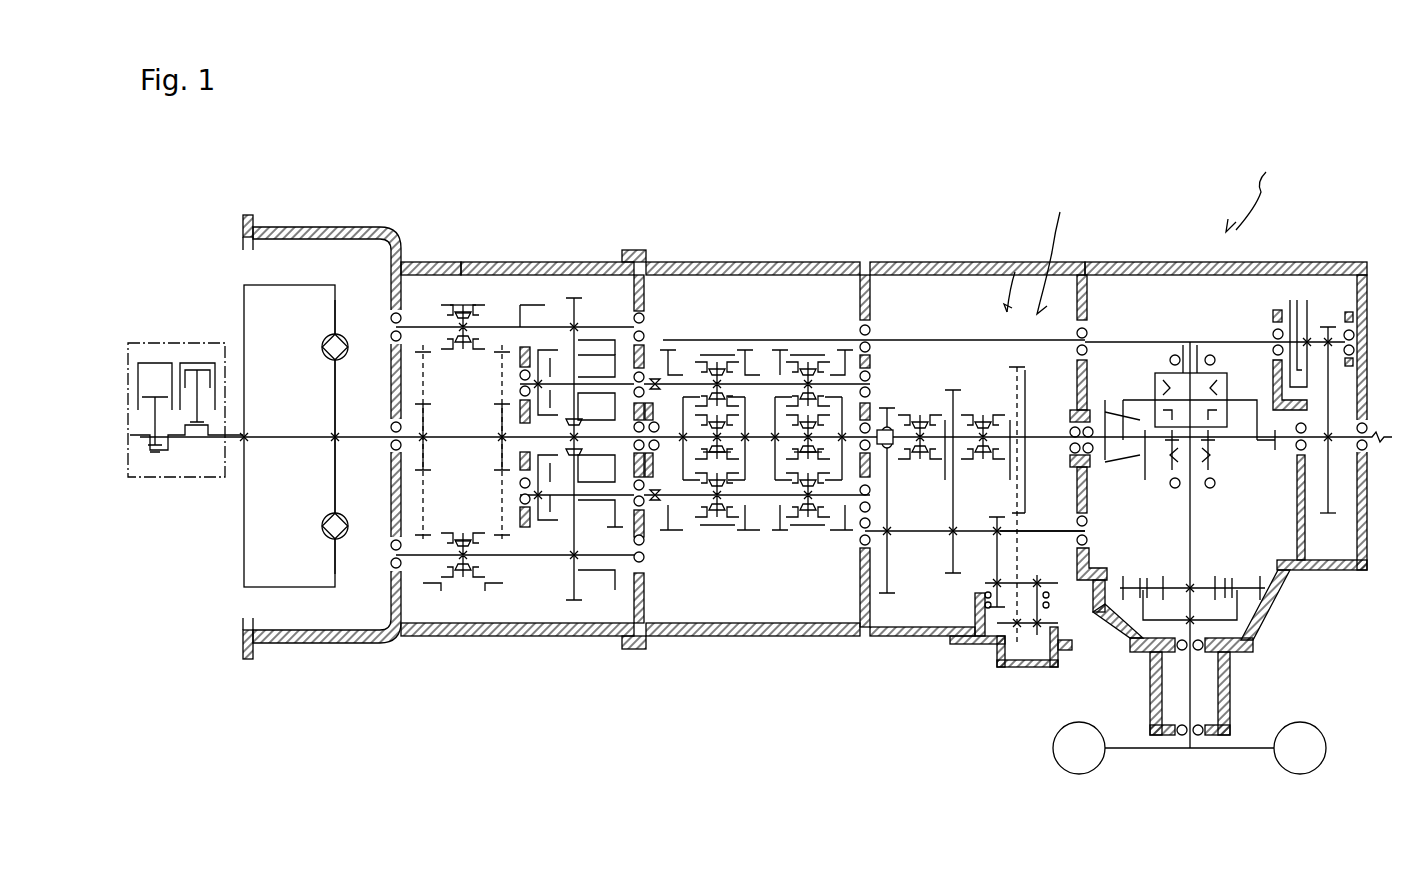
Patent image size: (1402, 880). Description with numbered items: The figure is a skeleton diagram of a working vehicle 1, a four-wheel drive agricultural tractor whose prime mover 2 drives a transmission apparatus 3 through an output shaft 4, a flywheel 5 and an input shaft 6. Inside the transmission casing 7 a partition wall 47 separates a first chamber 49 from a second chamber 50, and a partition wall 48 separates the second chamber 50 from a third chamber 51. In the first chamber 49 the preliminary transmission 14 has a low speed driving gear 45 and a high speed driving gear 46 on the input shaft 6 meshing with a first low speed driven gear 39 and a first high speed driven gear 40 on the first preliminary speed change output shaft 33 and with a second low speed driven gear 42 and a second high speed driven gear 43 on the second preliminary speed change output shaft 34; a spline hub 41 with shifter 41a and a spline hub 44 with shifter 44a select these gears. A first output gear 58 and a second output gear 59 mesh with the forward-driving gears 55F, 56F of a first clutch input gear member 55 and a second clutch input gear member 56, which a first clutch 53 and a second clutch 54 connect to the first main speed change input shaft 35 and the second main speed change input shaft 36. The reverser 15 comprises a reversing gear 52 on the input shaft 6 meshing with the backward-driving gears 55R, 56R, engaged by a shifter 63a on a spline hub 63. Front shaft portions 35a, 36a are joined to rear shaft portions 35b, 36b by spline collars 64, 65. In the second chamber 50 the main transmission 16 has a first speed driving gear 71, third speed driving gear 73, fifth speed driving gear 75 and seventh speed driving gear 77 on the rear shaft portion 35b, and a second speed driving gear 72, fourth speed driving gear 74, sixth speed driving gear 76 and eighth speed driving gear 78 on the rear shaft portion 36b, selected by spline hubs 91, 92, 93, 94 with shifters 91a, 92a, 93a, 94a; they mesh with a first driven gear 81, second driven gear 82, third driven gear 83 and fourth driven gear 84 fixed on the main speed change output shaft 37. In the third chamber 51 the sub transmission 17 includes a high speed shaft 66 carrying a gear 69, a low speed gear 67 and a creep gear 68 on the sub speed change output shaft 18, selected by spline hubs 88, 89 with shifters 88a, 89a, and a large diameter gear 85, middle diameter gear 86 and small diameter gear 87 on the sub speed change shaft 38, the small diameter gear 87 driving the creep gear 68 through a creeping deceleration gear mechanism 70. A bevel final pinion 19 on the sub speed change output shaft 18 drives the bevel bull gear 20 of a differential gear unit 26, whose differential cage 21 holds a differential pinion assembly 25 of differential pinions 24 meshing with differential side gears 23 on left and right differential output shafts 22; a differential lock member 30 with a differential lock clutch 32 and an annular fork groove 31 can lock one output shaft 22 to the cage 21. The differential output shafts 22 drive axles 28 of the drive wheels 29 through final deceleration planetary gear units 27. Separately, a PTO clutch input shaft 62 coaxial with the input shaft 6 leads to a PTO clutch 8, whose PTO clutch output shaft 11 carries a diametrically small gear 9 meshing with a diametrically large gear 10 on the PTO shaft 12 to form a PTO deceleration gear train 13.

The working vehicle 1 is at (1254, 189).
The prime mover 2 is at (209, 343).
The transmission apparatus 3 is at (1051, 251).
The output shaft 4 is at (238, 440).
The flywheel 5 is at (330, 285).
The input shaft 6 is at (345, 440).
The transmission casing 7 is at (680, 262).
The PTO clutch 8 is at (1292, 298).
The diametrically small gear 9 is at (1345, 317).
The diametrically large gear 10 is at (1330, 513).
The PTO clutch output shaft 11 is at (1318, 340).
The PTO shaft 12 is at (1340, 439).
The PTO deceleration gear train 13 is at (1335, 263).
The preliminary transmission 14 is at (482, 262).
The reverser 15 is at (527, 437).
The main transmission 16 is at (786, 265).
The sub transmission 17 is at (977, 268).
The sub speed change output shaft 18 is at (1040, 437).
The bevel final pinion 19 is at (1123, 465).
The bevel bull gear 20 is at (1272, 422).
The differential cage 21 is at (1195, 370).
The differential output shafts 22 is at (1190, 340).
The differential side gears 23 is at (1162, 375).
The differential pinions 24 is at (1160, 389).
The differential pinion assembly 25 is at (1135, 386).
The differential gear unit 26 is at (1217, 357).
The final deceleration planetary gear units 27 is at (1265, 623).
The axles 28 is at (1205, 700).
The drive wheels 29 is at (1280, 772).
The differential lock member 30 is at (1222, 483).
The annular fork groove 31 is at (1212, 470).
The differential lock clutch 32 is at (1216, 438).
The first preliminary speed change output shaft 33 is at (400, 326).
The second preliminary speed change output shaft 34 is at (400, 556).
The first main speed change input shaft 35 is at (515, 382).
The front shaft portion 35a is at (645, 337).
The rear shaft portion 35b is at (868, 342).
The second main speed change input shaft 36 is at (523, 484).
The front shaft portion 36a is at (643, 530).
The rear shaft portion 36b is at (875, 533).
The main speed change output shaft 37 is at (772, 434).
The sub speed change shaft 38 is at (1047, 529).
The first low speed driven gear 39 is at (423, 274).
The first high speed driven gear 40 is at (489, 299).
The spline hub 41 is at (458, 314).
The shifter 41a is at (465, 312).
The second low speed driven gear 42 is at (425, 591).
The second high speed driven gear 43 is at (500, 589).
The spline hub 44 is at (457, 540).
The shifter 44a is at (468, 540).
The low speed driving gear 45 is at (423, 436).
The high speed driving gear 46 is at (502, 405).
The partition wall 47 is at (647, 639).
The partition wall 48 is at (877, 637).
The first chamber 49 is at (512, 300).
The second chamber 50 is at (738, 302).
The third chamber 51 is at (943, 314).
The reversing gear 52 is at (596, 406).
The first clutch 53 is at (548, 361).
The second clutch 54 is at (550, 526).
The first clutch input gear member 55 is at (574, 312).
The forward-driving gear 55F is at (580, 372).
The backward-driving gear 55R is at (592, 340).
The second clutch input gear member 56 is at (570, 592).
The forward-driving gear 56F is at (580, 518).
The backward-driving gear 56R is at (600, 572).
The first output gear 58 is at (582, 264).
The second output gear 59 is at (579, 633).
The PTO clutch input shaft 62 is at (870, 341).
The spline hub 63 is at (570, 442).
The shifter 63a is at (595, 471).
The spline collar 64 is at (662, 425).
The spline collar 65 is at (662, 465).
The high speed shaft 66 is at (896, 422).
The low speed gear 67 is at (950, 399).
The creep gear 68 is at (1017, 367).
The gear 69 is at (886, 417).
The creeping deceleration gear mechanism 70 is at (1023, 667).
The first speed driving gear 71 is at (676, 359).
The second speed driving gear 72 is at (673, 528).
The third speed driving gear 73 is at (748, 359).
The fourth speed driving gear 74 is at (745, 530).
The fifth speed driving gear 75 is at (775, 348).
The sixth speed driving gear 76 is at (780, 537).
The seventh speed driving gear 77 is at (843, 346).
The eighth speed driving gear 78 is at (840, 532).
The first driven gear 81 is at (717, 433).
The second driven gear 82 is at (719, 458).
The third driven gear 83 is at (808, 434).
The fourth driven gear 84 is at (808, 456).
The large diameter gear 85 is at (889, 593).
The middle diameter gear 86 is at (953, 577).
The small diameter gear 87 is at (993, 547).
The spline hub 88 is at (919, 451).
The shifter 88a is at (945, 480).
The spline hub 89 is at (979, 451).
The shifter 89a is at (1007, 480).
The spline hub 91 is at (712, 375).
The shifter 91a is at (726, 352).
The spline hub 92 is at (716, 512).
The shifter 92a is at (728, 531).
The spline hub 93 is at (806, 375).
The shifter 93a is at (815, 352).
The spline hub 94 is at (808, 512).
The shifter 94a is at (818, 531).